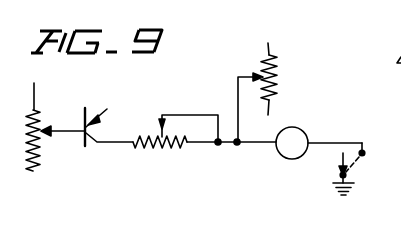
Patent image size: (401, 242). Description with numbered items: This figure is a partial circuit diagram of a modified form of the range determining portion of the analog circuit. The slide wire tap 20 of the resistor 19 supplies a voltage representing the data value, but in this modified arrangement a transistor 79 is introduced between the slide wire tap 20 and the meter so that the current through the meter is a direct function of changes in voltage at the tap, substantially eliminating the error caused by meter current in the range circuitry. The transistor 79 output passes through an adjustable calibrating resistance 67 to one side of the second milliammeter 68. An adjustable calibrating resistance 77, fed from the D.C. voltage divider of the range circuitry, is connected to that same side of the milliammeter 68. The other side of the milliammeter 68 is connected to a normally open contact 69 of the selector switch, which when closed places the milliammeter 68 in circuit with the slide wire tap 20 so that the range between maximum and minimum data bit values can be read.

The resistor 19 is at (40, 150).
The slide wire tap 20 is at (46, 129).
The transistor 79 is at (90, 118).
The adjustable calibrating resistance 67 is at (146, 133).
The adjustable calibrating resistance 77 is at (263, 69).
The milliammeter 68 is at (285, 127).
The normally open contact 69 is at (365, 152).